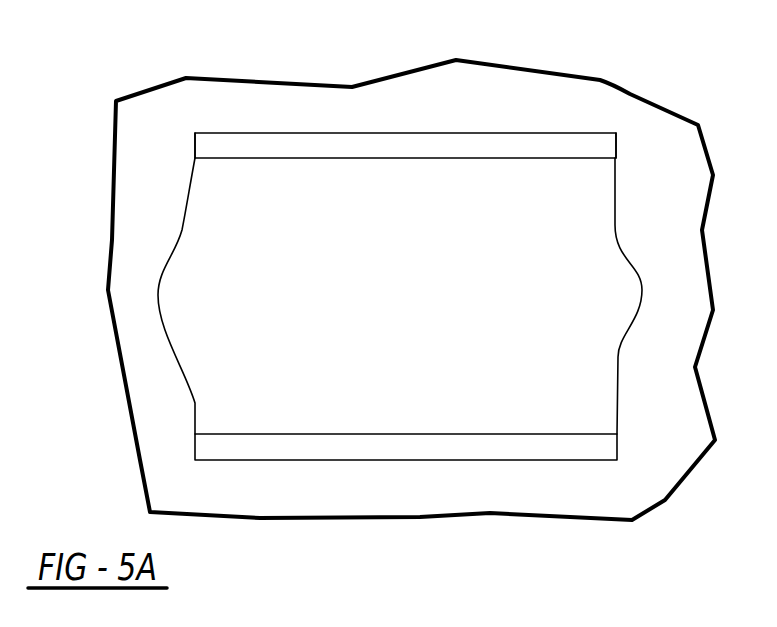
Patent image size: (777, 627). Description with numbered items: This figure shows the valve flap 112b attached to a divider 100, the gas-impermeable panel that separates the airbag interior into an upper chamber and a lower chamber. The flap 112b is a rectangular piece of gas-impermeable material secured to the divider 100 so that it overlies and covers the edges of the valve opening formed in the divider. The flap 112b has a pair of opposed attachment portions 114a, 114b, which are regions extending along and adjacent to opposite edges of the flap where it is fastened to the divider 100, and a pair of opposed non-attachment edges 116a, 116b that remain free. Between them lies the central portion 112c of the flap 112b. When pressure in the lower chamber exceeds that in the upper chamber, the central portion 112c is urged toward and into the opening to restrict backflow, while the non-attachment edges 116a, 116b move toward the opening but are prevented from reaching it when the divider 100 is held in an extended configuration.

The divider 100 is at (687, 408).
The valve flap 112b is at (215, 350).
The central portion 112c is at (403, 350).
The attachment portion 114a is at (337, 443).
The attachment portion 114b is at (317, 145).
The non-attachment edge 116a is at (182, 200).
The non-attachment edge 116b is at (615, 225).